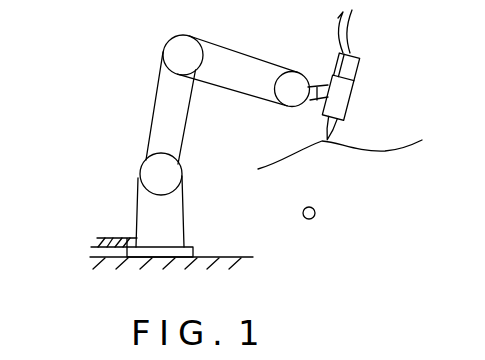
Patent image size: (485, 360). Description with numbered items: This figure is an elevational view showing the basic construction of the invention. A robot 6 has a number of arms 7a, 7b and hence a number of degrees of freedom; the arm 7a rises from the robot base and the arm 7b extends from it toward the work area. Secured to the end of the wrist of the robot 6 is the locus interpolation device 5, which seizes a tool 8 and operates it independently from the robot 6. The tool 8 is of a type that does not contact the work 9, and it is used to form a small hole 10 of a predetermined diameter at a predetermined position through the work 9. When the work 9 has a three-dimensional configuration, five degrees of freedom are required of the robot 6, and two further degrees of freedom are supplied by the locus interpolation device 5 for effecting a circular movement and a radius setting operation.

The locus interpolation device 5 is at (354, 88).
The robot 6 is at (141, 123).
The arm 7a is at (168, 90).
The arm 7b is at (248, 67).
The tool 8 is at (327, 125).
The work 9 is at (365, 148).
The small hole 10 is at (309, 219).